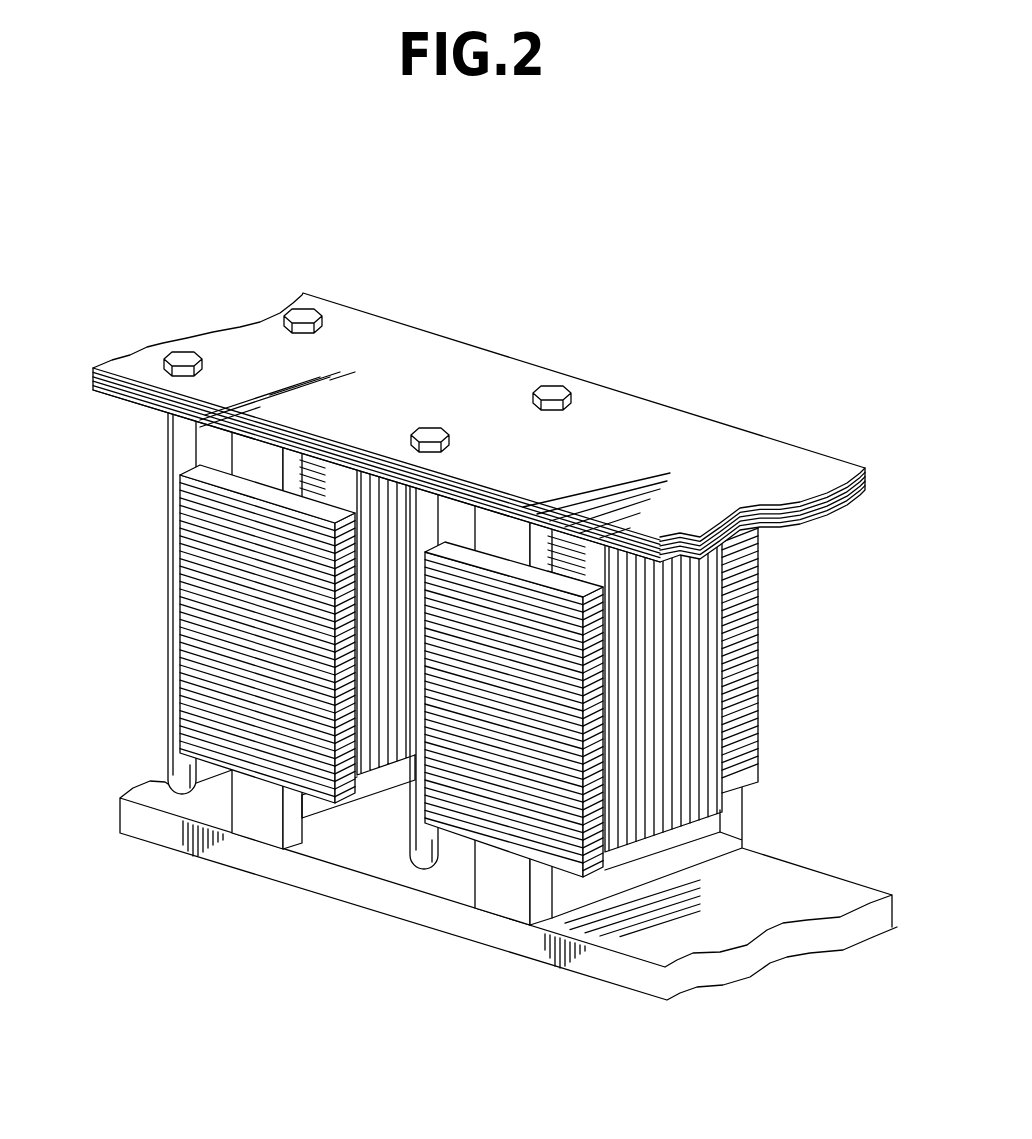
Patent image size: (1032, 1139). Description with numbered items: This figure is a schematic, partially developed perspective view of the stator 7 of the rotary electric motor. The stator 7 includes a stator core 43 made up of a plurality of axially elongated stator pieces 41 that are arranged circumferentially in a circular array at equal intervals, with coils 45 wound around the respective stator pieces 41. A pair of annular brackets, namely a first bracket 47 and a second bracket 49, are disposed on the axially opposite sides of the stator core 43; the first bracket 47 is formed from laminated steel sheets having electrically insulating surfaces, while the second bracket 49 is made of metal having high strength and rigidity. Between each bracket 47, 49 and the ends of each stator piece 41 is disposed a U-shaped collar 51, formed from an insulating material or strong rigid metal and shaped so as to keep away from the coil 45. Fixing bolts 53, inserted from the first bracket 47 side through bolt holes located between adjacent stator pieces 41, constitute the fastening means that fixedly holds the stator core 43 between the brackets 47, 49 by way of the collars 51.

The stator 7 is at (471, 634).
The stator piece 41 is at (193, 535).
The stator core 43 is at (155, 690).
The coil 45 is at (683, 662).
The first bracket 47 is at (793, 477).
The second bracket 49 is at (802, 890).
The U-shaped collar 51 is at (238, 462).
The fixing bolt 53 is at (552, 393).